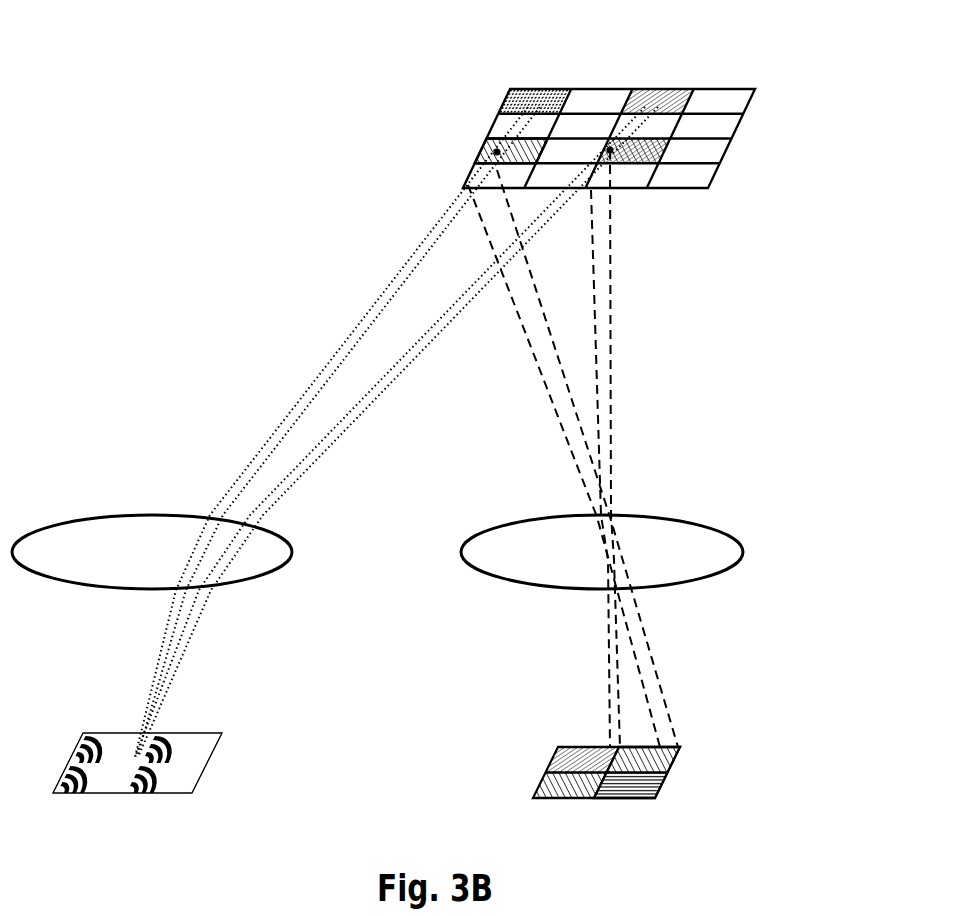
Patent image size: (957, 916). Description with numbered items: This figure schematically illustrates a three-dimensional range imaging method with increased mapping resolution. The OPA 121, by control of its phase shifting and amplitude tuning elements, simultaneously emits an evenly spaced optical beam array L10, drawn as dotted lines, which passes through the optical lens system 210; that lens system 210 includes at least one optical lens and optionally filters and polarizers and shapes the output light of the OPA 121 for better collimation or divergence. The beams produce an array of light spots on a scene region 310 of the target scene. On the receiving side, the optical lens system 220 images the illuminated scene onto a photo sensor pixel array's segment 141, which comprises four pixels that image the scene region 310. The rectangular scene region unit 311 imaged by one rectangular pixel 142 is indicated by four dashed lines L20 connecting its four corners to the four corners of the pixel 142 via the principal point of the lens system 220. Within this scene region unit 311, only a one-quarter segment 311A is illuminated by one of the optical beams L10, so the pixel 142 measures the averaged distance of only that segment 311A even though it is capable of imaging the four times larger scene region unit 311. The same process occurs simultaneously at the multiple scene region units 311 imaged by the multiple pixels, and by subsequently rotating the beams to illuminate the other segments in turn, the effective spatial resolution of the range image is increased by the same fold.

The scene region 310 is at (487, 124).
The scene region unit 311 is at (472, 159).
The segment 311A is at (468, 164).
The optical beam array L10 is at (383, 299).
The dashed lines L20 is at (604, 296).
The optical lens system 210 is at (93, 514).
The optical lens system 220 is at (751, 542).
The OPA 121 is at (198, 770).
The photo sensor pixel array's segment 141 is at (546, 760).
The pixel 142 is at (651, 757).